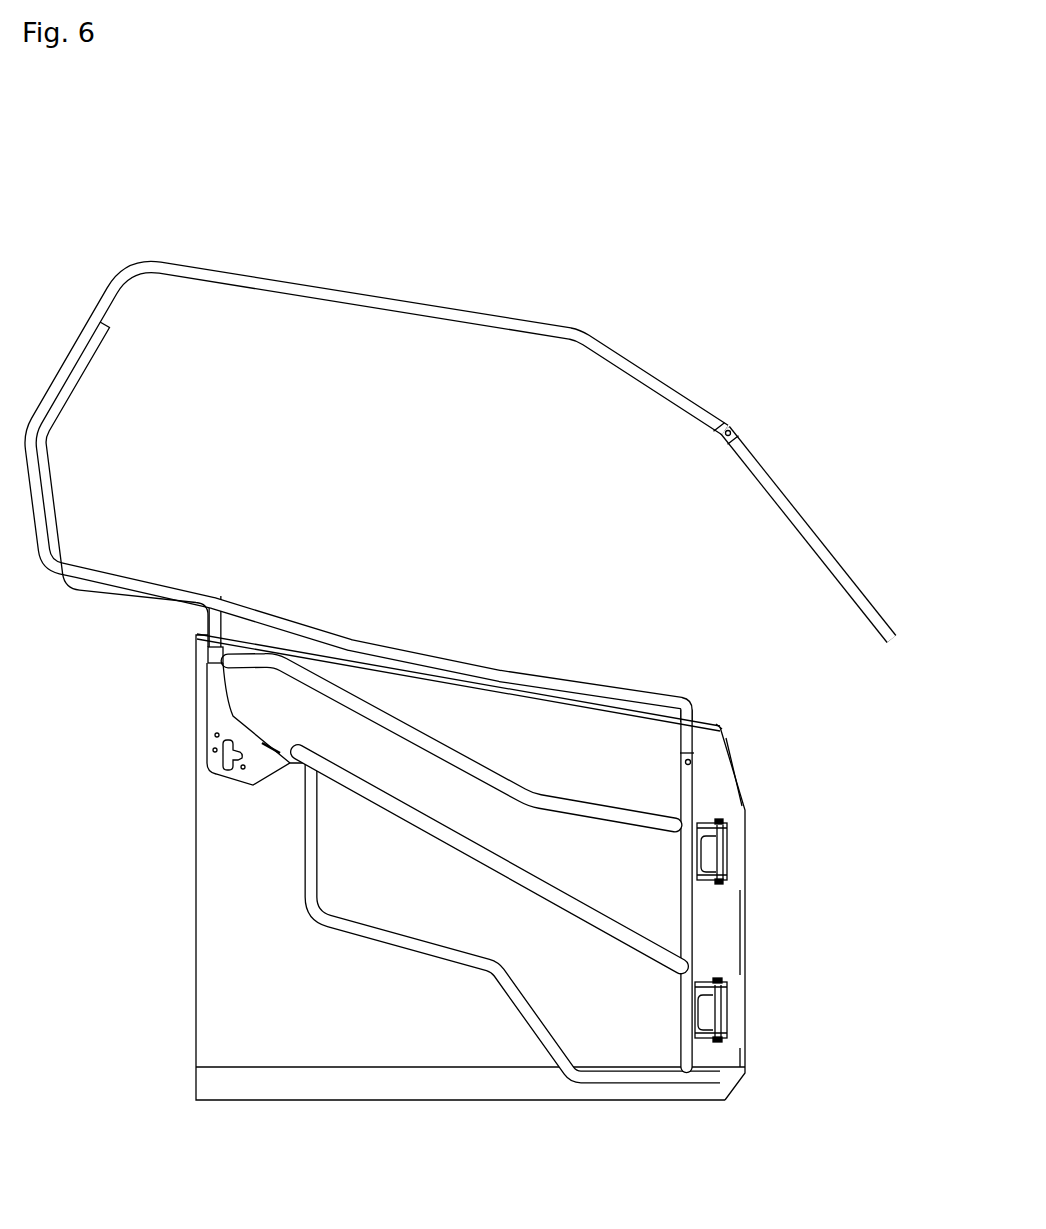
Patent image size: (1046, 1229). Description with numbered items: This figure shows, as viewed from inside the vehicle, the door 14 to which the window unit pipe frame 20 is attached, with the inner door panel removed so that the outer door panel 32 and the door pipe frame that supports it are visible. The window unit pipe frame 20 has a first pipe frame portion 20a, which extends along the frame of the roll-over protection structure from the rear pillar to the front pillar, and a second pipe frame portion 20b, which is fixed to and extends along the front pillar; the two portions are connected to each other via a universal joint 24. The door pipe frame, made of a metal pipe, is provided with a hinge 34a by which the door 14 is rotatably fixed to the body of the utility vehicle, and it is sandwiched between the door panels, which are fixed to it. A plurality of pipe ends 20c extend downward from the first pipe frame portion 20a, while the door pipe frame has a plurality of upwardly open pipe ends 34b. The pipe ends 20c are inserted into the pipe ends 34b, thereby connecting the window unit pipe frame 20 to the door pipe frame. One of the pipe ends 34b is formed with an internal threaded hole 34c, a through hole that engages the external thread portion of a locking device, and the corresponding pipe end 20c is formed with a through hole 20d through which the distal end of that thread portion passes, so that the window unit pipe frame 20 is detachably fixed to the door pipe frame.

The door 14 is at (774, 861).
The window unit pipe frame 20 is at (427, 300).
The first pipe frame portion 20a is at (310, 297).
The second pipe frame portion 20b is at (793, 500).
The pipe ends 20c is at (203, 633).
The through hole 20d is at (458, 682).
The universal joint 24 is at (720, 437).
The outer door panel 32 is at (232, 978).
The hinge 34a is at (727, 862).
The pipe ends 34b is at (207, 653).
The internal threaded hole 34c is at (720, 728).